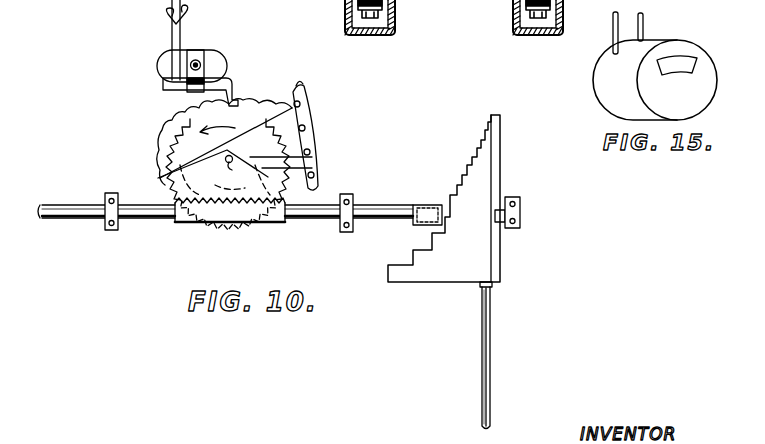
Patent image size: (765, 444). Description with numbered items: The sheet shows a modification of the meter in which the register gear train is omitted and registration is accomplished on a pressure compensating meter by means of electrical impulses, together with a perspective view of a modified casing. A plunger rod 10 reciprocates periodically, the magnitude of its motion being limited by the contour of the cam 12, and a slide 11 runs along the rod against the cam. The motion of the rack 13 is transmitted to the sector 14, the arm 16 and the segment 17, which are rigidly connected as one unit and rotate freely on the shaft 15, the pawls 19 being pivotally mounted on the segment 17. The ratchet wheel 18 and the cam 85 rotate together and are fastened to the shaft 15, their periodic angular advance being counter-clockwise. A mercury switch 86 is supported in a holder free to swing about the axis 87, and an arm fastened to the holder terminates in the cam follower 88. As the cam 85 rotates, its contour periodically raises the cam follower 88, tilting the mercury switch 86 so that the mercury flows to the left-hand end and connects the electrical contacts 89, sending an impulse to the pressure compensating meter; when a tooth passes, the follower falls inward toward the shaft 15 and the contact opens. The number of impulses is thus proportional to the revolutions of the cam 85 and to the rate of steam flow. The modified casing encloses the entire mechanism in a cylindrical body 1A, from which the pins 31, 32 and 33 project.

In FIG. 10, the rod 10 is at (76, 205).
In FIG. 10, the slide block 11 is at (421, 205).
In FIG. 10, the stepped plate 12 is at (471, 168).
In FIG. 10, the rack 13 is at (187, 216).
In FIG. 10, the gear 14 is at (207, 175).
In FIG. 10, the pivot plate 15 is at (231, 163).
In FIG. 10, the link 16 is at (269, 157).
In FIG. 10, the arcuate arm 17 is at (316, 132).
In FIG. 10, the gear teeth 18 is at (257, 230).
In FIG. 10, the tab 19 is at (305, 90).
In FIG. 10, the weight 85 is at (192, 125).
In FIG. 10, the oval member 86 is at (157, 66).
In FIG. 10, the clamp block 87 is at (202, 51).
In FIG. 10, the bar 88 is at (233, 98).
In FIG. 10, the stem 89 is at (170, 30).
In FIG. 15, the housing 1A is at (597, 66).
In FIG. 15, the pin 31 is at (612, 30).
In FIG. 15, the pin 32 is at (643, 32).
In FIG. 15, the pin 33 is at (613, 3).